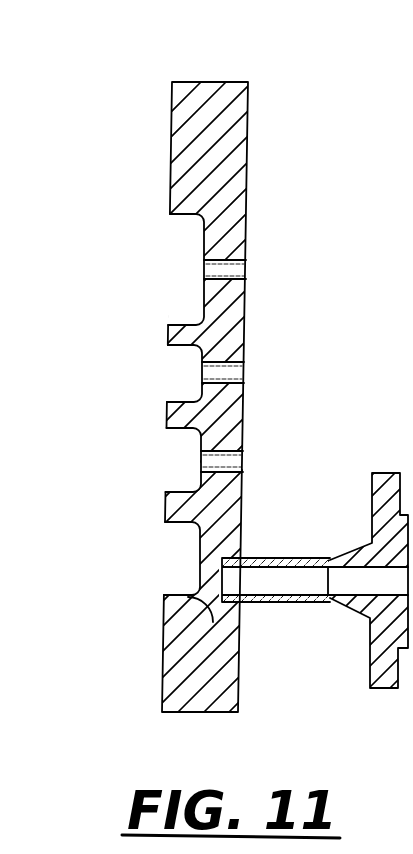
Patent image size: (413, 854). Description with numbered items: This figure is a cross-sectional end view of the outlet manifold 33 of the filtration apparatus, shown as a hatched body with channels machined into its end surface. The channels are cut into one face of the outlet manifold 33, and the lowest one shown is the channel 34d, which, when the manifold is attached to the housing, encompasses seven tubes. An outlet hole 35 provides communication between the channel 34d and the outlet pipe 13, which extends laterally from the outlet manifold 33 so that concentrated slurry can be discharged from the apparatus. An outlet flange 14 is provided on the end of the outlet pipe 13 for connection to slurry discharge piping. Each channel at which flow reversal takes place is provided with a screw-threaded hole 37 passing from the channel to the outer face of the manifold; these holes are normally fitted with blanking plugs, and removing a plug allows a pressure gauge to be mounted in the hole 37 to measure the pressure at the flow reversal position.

The outlet manifold 33 is at (195, 92).
The screw-threaded hole 37 is at (232, 463).
The channel 34d is at (176, 560).
The outlet hole 35 is at (186, 599).
The outlet pipe 13 is at (282, 588).
The outlet flange 14 is at (380, 682).